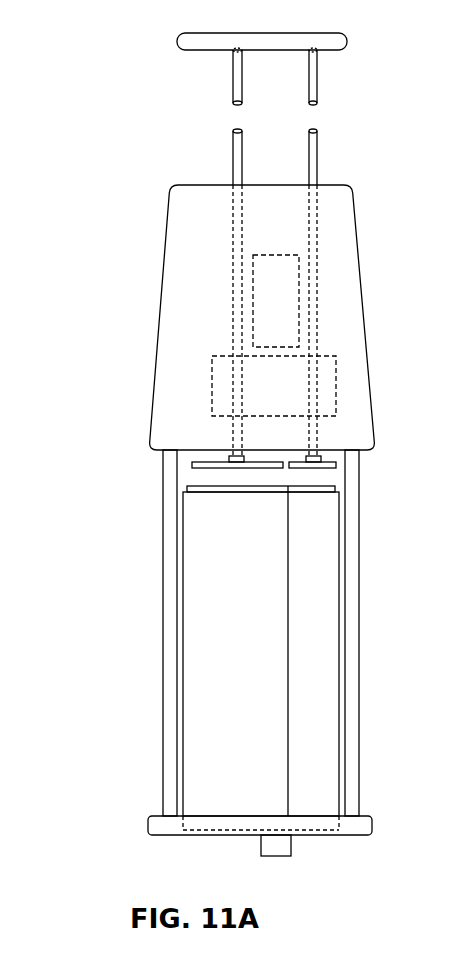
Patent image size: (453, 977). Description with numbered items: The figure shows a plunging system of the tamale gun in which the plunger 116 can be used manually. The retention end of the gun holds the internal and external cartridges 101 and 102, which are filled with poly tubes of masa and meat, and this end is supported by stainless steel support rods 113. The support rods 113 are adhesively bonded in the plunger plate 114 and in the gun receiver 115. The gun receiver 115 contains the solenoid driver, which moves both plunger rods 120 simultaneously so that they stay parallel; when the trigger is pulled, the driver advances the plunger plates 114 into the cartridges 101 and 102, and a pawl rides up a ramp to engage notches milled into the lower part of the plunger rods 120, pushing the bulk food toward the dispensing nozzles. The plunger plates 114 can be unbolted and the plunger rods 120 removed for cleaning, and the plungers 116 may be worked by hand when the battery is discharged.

The cartridge 101 is at (174, 658).
The cartridge 102 is at (302, 743).
The stainless steel support rods 113 is at (168, 560).
The plunger plate 114 is at (200, 464).
The gun receiver 115 is at (262, 335).
The plunger 116 is at (200, 43).
The plunger rods 120 is at (317, 236).